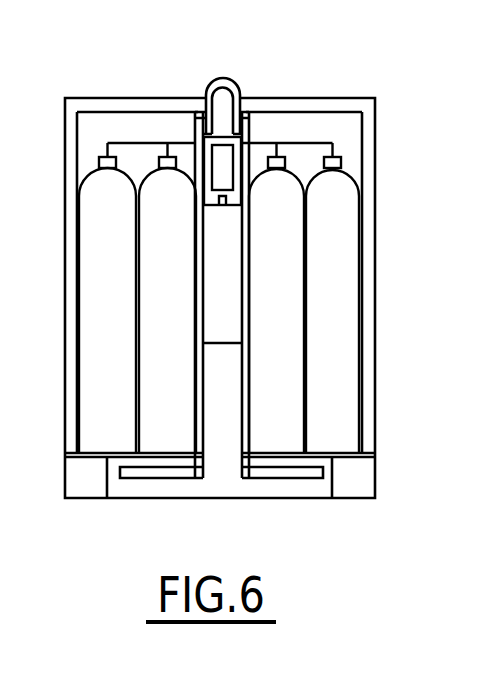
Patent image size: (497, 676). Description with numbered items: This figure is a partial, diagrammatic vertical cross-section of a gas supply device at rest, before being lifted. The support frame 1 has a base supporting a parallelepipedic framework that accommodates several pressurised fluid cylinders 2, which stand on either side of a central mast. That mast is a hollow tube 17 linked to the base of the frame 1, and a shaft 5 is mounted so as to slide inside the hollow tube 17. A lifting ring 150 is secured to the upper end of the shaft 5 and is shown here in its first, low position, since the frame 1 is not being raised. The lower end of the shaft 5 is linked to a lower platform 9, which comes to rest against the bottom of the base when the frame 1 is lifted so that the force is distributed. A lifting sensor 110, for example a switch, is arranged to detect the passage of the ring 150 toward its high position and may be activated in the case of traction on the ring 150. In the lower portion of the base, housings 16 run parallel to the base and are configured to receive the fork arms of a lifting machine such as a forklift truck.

The support frame 1 is at (75, 128).
The pressurised fluid cylinders 2 is at (155, 272).
The shaft 5 is at (234, 343).
The lower platform 9 is at (318, 484).
The housings 16 is at (124, 491).
The hollow tube 17 is at (258, 122).
The lifting sensor 110 is at (250, 206).
The lifting ring 150 is at (247, 85).